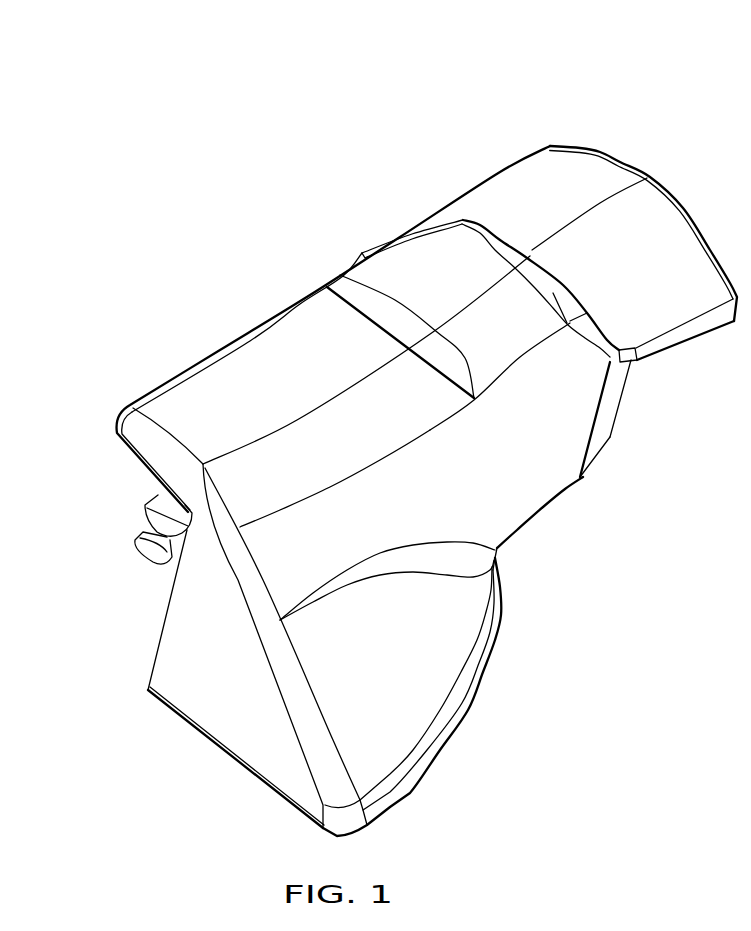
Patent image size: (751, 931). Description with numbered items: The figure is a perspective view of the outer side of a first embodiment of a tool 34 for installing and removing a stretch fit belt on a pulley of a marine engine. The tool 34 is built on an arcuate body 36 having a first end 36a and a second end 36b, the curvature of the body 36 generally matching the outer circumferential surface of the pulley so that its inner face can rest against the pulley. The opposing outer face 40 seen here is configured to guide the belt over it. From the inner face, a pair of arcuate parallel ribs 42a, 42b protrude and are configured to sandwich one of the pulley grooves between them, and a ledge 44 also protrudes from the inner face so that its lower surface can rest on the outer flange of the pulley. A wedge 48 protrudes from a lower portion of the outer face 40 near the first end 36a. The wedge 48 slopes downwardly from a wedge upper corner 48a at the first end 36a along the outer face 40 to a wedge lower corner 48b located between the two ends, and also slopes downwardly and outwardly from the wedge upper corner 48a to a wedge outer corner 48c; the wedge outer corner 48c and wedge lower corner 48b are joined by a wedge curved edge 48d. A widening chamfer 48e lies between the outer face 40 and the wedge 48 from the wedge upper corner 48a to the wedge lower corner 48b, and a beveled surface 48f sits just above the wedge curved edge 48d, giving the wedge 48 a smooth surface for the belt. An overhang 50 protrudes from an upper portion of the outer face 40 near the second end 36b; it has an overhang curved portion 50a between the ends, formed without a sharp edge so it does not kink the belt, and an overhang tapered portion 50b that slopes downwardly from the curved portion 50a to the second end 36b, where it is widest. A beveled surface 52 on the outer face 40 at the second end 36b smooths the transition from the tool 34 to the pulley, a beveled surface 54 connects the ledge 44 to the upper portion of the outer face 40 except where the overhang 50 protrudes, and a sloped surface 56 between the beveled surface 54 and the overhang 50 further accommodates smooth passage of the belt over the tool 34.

The tool 34 is at (367, 105).
The ledge 44 is at (526, 210).
The overhang 50 is at (653, 240).
The overhang curved portion 50a is at (590, 340).
The overhang tapered portion 50b is at (713, 322).
The sloped surface 56 is at (503, 343).
The beveled surface 54 is at (329, 456).
The outer face 40 is at (439, 485).
The arcuate body 36 is at (547, 482).
The first end 36a is at (212, 725).
The second end 36b is at (622, 397).
The beveled surface 52 is at (603, 430).
The arcuate rib 42a is at (153, 493).
The arcuate rib 42b is at (153, 548).
The wedge 48 is at (403, 703).
The wedge upper corner 48a is at (282, 621).
The wedge lower corner 48b is at (497, 557).
The wedge outer corner 48c is at (350, 825).
The wedge curved edge 48d is at (473, 707).
The widening chamfer 48e is at (418, 565).
The beveled surface 48f is at (480, 650).